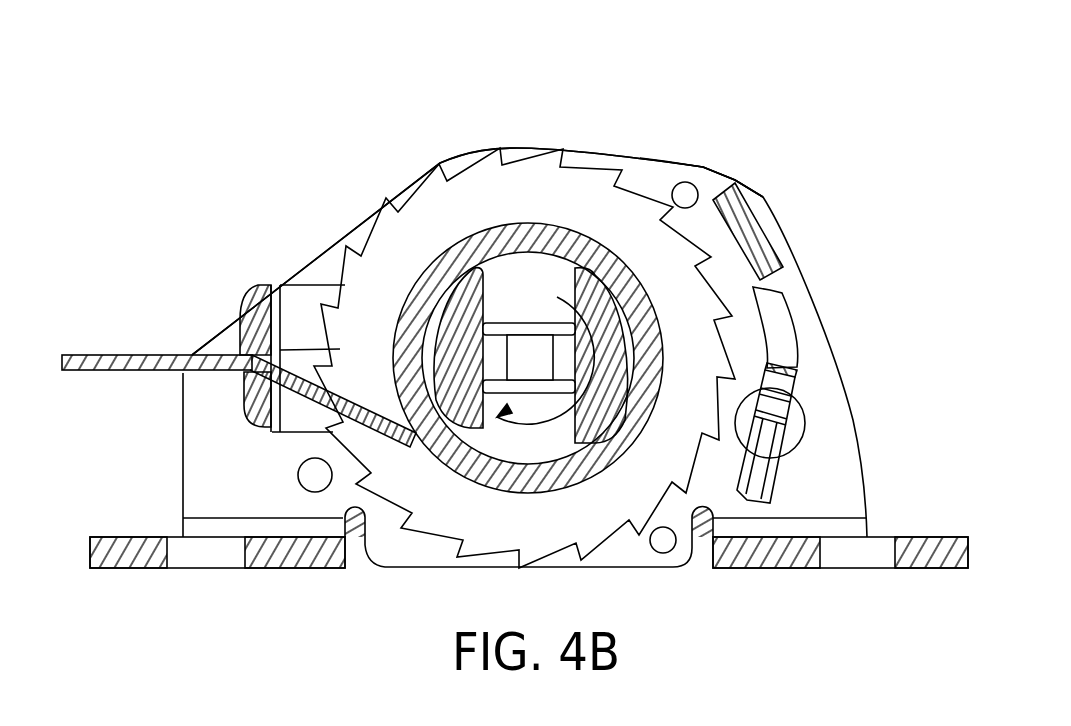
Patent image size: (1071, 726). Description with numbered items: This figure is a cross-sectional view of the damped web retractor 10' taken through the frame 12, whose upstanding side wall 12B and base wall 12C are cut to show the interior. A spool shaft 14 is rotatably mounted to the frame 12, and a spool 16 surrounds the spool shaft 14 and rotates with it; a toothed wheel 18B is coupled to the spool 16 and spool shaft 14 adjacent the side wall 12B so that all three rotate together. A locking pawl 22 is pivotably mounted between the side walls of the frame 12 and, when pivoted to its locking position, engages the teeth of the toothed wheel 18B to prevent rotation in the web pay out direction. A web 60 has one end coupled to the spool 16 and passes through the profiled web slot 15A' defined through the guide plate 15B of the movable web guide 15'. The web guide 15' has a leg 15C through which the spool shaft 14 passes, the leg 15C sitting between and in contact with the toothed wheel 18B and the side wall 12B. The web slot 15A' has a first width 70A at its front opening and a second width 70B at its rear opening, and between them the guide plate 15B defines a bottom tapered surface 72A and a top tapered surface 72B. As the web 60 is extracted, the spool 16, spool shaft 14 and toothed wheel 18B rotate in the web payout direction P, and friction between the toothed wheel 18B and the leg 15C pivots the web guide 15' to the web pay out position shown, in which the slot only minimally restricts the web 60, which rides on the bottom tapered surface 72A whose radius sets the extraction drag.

The damped web retractor 10' is at (561, 204).
The frame 12 is at (850, 335).
The side wall 12B is at (672, 160).
The base wall 12C is at (918, 537).
The toothed wheel 18B is at (597, 180).
The spool 16 is at (460, 293).
The spool shaft 14 is at (523, 350).
The web payout direction P is at (527, 430).
The locking pawl 22 is at (777, 477).
The first width 70A is at (238, 352).
The second width 70B is at (282, 350).
The bottom tapered surface 72A is at (243, 378).
The top tapered surface 72B is at (248, 297).
The web 60 is at (95, 355).
The web guide 15' is at (275, 232).
The leg 15C is at (323, 282).
The guide plate 15B is at (252, 297).
The profiled web slot 15A' is at (164, 419).